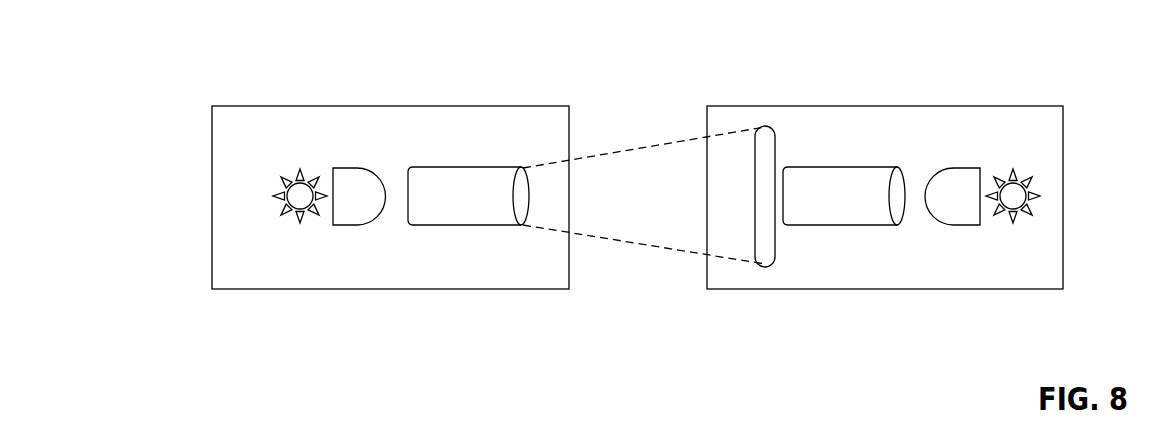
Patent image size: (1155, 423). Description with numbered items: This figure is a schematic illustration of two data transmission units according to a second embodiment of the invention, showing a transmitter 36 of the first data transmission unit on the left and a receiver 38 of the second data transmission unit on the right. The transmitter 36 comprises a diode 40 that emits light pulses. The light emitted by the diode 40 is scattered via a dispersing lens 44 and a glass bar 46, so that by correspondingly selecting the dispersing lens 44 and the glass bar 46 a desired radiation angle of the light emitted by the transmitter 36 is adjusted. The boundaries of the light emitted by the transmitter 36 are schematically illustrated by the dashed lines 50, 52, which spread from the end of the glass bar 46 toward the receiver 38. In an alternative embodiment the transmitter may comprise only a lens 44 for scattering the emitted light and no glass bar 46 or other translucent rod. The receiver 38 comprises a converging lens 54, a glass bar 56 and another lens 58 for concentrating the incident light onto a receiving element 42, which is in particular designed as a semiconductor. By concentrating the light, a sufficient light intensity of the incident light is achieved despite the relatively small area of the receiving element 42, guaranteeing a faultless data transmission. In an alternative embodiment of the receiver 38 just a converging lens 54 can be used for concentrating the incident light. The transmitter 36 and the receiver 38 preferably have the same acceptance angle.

The transmitter 36 is at (345, 117).
The receiver 38 is at (870, 133).
The diode 40 is at (300, 188).
The receiving element 42 is at (1017, 183).
The dispersing lens 44 is at (360, 213).
The glass bar 46 is at (451, 187).
The dashed line 50 is at (620, 242).
The dashed line 52 is at (645, 143).
The converging lens 54 is at (765, 152).
The glass bar 56 is at (842, 208).
The lens 58 is at (962, 180).